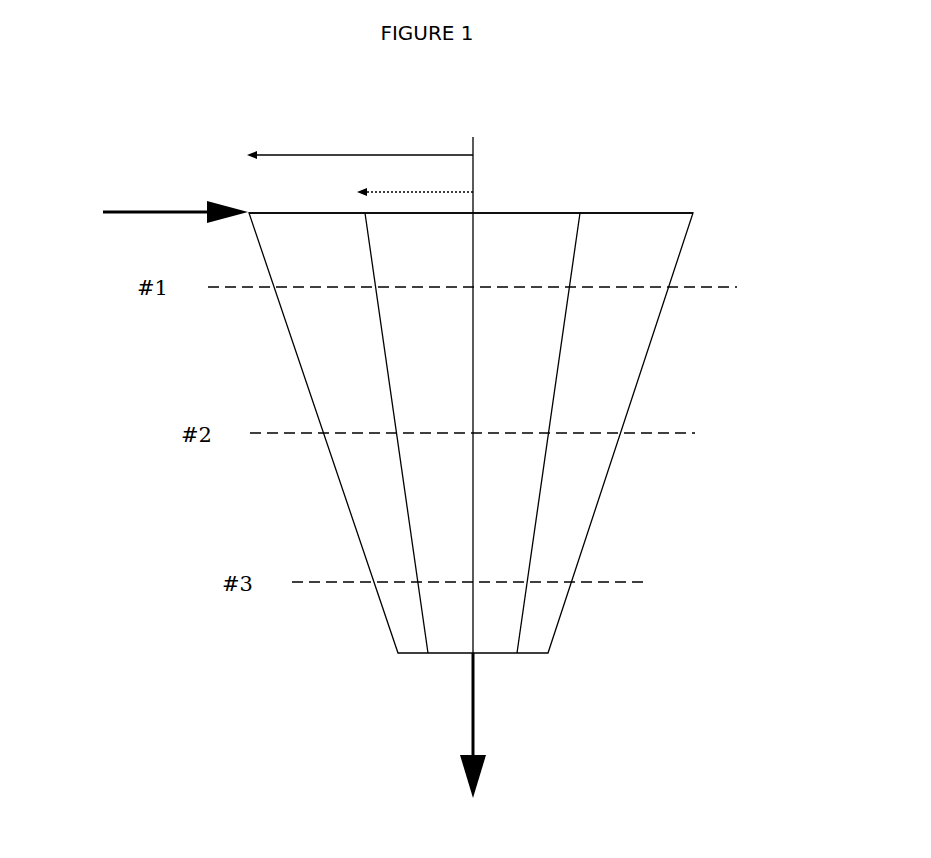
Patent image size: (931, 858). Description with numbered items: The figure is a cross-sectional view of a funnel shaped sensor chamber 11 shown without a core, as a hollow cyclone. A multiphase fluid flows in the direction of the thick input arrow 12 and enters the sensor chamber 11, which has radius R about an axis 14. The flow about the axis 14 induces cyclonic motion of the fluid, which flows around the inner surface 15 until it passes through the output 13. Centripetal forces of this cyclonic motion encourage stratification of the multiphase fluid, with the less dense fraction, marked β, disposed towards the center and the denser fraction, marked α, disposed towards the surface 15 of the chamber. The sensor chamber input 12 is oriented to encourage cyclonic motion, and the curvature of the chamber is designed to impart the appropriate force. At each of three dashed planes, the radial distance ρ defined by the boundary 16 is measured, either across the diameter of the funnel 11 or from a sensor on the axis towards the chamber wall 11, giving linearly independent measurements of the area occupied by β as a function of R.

The funnel shaped sensor chamber 11 is at (660, 326).
The input arrow 12 is at (120, 204).
The output 13 is at (482, 720).
The axis 14 is at (490, 166).
The inner surface 15 is at (244, 205).
The boundary 16 is at (360, 275).